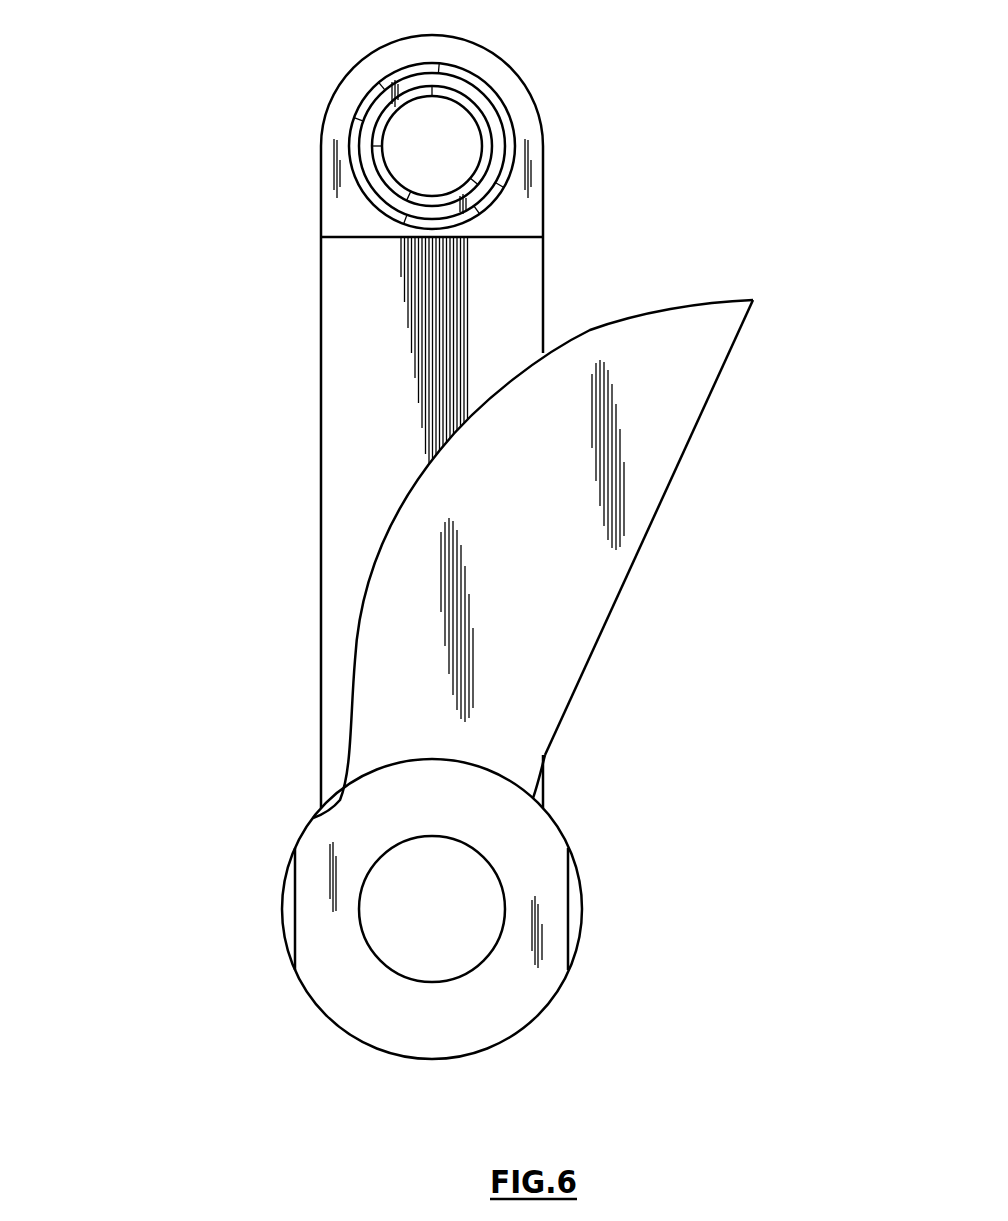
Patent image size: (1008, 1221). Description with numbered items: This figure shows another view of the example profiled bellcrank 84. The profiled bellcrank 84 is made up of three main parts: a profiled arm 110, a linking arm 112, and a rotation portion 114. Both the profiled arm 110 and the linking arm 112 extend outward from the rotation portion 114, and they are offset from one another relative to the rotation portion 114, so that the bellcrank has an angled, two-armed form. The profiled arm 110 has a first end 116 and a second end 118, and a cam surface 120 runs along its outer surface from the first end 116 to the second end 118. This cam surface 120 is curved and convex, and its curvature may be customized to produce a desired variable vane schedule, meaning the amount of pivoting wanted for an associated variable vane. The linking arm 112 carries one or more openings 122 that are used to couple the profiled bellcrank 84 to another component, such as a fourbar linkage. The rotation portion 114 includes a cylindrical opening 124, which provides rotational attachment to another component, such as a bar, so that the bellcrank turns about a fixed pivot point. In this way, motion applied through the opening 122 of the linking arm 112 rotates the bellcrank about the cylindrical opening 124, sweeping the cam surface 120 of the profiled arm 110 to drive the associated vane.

The profiled bellcrank 84 is at (124, 500).
The profiled arm 110 is at (682, 517).
The linking arm 112 is at (281, 399).
The rotation portion 114 is at (291, 1023).
The first end 116 is at (580, 768).
The second end 118 is at (789, 292).
The cam surface 120 is at (617, 318).
The opening 122 is at (455, 145).
The cylindrical opening 124 is at (477, 930).